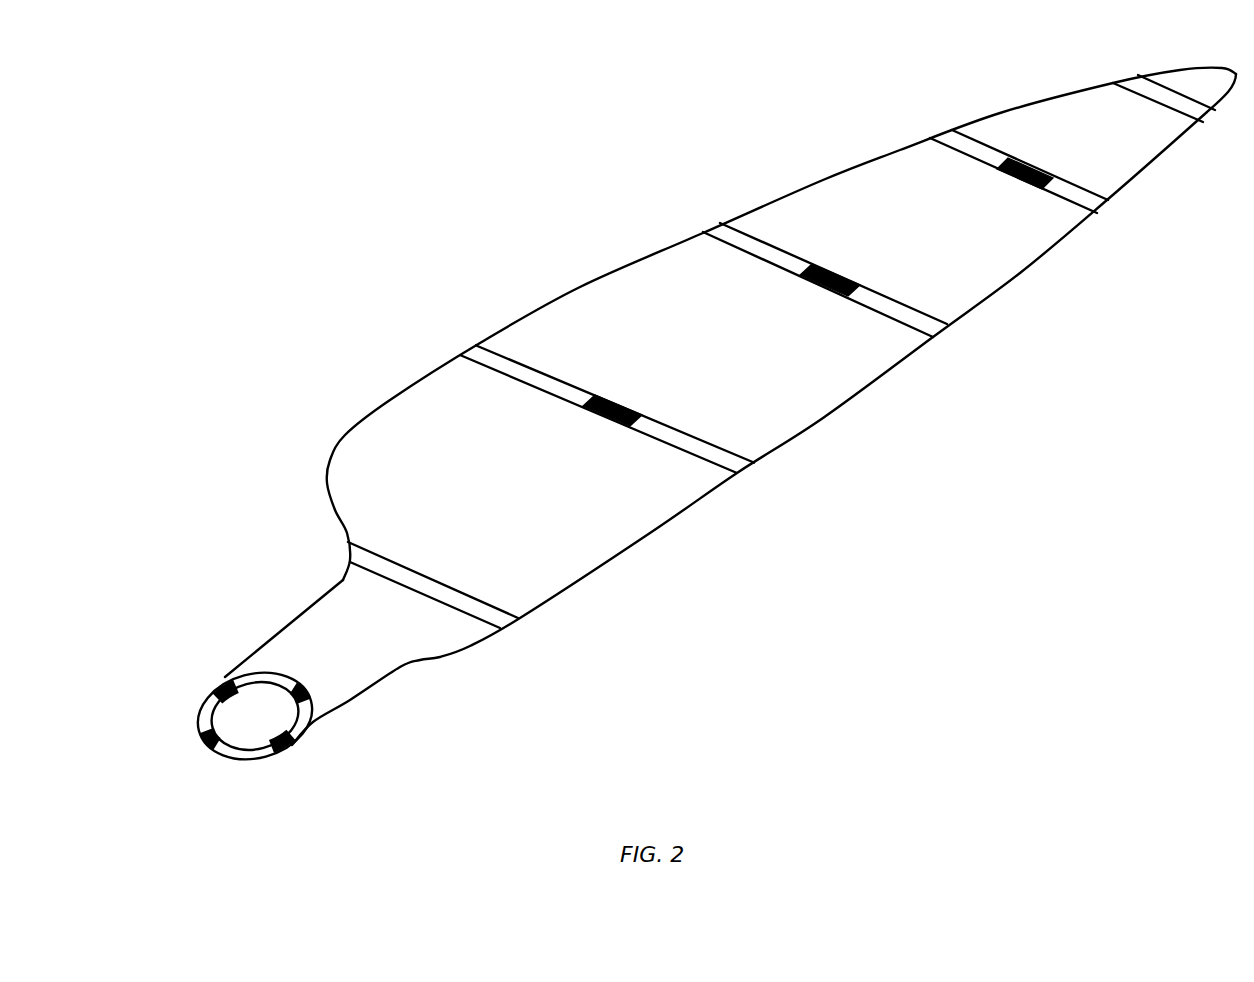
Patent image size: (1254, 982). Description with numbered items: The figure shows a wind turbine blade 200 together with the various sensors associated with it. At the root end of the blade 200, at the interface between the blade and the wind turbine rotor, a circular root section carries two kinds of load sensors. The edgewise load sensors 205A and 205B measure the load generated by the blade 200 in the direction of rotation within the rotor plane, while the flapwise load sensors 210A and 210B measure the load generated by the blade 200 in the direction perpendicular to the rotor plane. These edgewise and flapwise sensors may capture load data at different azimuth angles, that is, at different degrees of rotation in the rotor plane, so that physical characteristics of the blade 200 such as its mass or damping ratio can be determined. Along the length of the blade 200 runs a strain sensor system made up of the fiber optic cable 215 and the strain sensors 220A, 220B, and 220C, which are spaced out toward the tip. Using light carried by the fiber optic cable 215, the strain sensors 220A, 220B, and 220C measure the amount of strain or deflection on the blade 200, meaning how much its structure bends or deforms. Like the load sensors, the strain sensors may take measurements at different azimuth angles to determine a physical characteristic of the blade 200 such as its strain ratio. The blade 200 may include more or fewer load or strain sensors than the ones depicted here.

The turbine blade 200 is at (388, 182).
The fiber optic cable 215 is at (504, 371).
The strain sensor 220A is at (603, 413).
The strain sensor 220B is at (818, 288).
The strain sensor 220C is at (1013, 183).
The edgewise load sensor 205A is at (297, 752).
The edgewise load sensor 205B is at (222, 680).
The flapwise load sensor 210A is at (213, 738).
The flapwise load sensor 210B is at (305, 698).